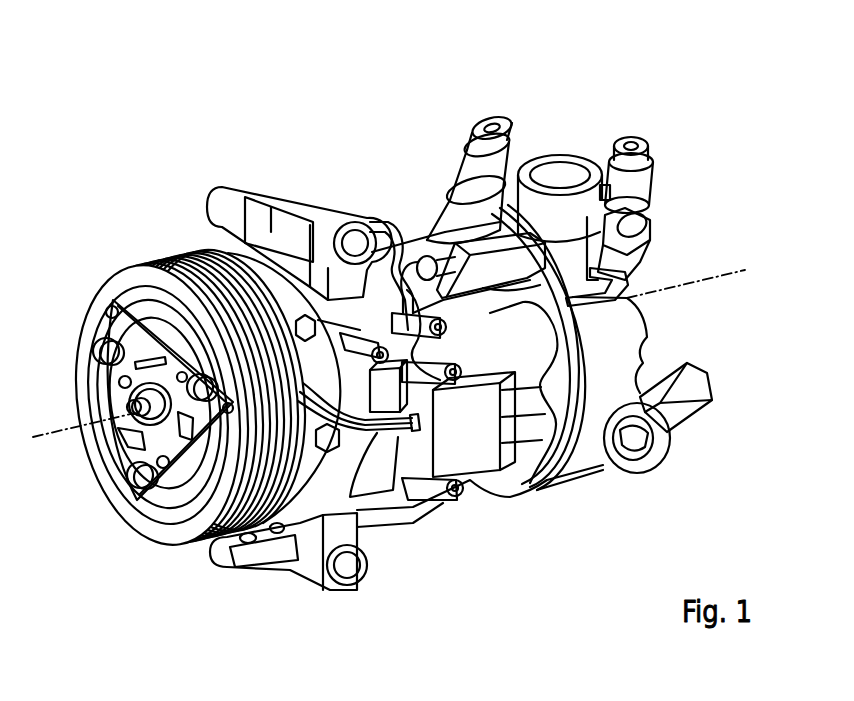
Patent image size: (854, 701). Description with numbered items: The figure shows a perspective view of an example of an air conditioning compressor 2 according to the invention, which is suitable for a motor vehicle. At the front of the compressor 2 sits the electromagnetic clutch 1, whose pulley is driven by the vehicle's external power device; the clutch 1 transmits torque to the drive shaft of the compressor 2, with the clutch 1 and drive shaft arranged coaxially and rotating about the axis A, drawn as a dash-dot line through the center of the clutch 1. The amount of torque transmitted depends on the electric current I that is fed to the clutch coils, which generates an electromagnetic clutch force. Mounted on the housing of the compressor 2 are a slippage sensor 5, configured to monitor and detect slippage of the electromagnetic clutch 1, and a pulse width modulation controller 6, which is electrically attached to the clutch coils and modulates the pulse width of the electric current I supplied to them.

The electromagnetic clutch 1 is at (183, 268).
The air conditioning compressor 2 is at (703, 152).
The slippage sensor 5 is at (392, 403).
The pulse width modulation controller 6 is at (475, 441).
The axis A is at (710, 272).
The electric current I is at (380, 432).